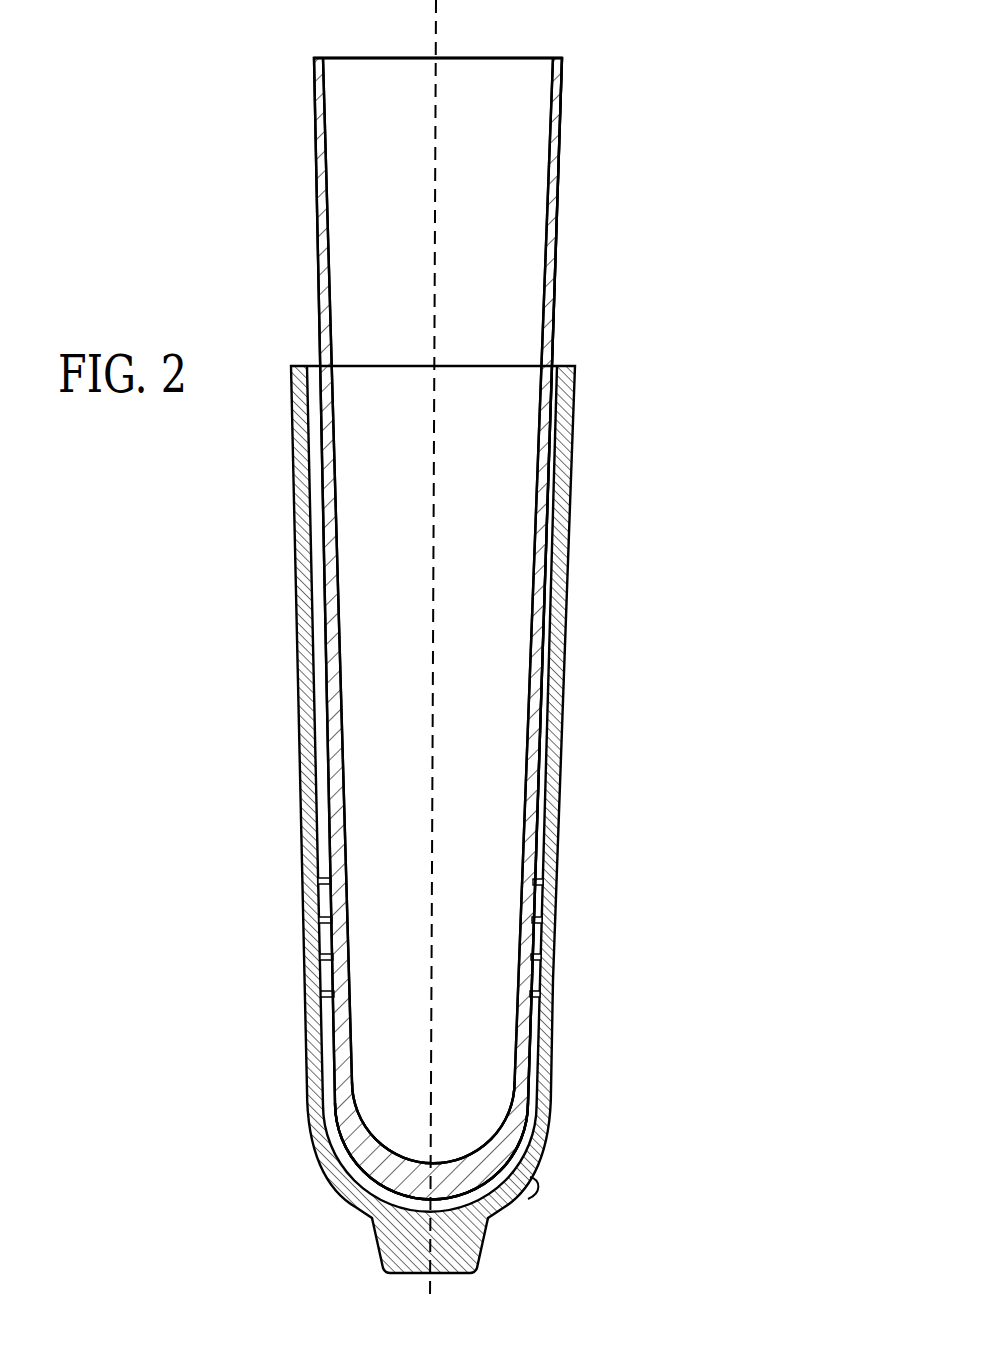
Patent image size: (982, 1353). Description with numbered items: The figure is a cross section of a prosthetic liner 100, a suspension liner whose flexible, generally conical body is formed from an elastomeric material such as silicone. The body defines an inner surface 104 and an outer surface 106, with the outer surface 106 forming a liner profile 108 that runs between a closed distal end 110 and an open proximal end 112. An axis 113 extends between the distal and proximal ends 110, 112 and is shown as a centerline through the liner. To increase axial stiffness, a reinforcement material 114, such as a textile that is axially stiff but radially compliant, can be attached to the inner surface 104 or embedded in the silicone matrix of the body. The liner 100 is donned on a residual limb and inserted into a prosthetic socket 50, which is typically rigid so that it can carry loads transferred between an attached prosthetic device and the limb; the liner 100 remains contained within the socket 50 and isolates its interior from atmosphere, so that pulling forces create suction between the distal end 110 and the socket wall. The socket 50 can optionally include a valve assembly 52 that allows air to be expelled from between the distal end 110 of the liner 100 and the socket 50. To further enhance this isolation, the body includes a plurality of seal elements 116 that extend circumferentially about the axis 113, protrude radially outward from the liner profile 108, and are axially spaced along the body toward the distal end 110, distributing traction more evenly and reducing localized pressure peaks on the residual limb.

The prosthetic liner 100 is at (270, 163).
The inner surface 104 is at (365, 1110).
The outer surface 106 is at (560, 172).
The liner profile 108 is at (560, 172).
The closed distal end 110 is at (368, 1155).
The open proximal end 112 is at (523, 58).
The axis 113 is at (433, 12).
The reinforcement material 114 is at (547, 338).
The seal element 116 is at (536, 882).
The prosthetic socket 50 is at (302, 876).
The valve assembly 52 is at (530, 1187).